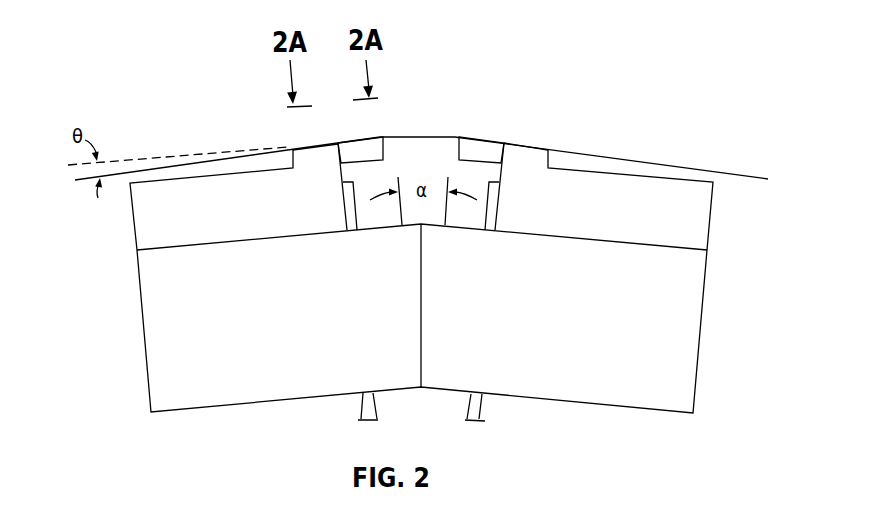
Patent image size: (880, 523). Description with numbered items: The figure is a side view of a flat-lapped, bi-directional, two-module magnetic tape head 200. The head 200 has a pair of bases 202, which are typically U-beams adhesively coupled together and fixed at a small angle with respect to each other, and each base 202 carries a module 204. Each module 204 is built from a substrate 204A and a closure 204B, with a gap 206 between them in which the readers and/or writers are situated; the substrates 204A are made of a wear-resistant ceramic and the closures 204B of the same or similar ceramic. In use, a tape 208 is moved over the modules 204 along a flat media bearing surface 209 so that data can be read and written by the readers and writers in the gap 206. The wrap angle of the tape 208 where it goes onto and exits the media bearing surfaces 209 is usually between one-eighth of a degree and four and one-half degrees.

The two-module magnetic tape head 200 is at (172, 102).
The base 202 is at (140, 312).
The module 204 is at (133, 222).
The substrate 204A is at (187, 200).
The closure 204B is at (460, 152).
The gap 206 is at (344, 130).
The tape 208 is at (635, 157).
The media bearing surface 209 is at (293, 138).